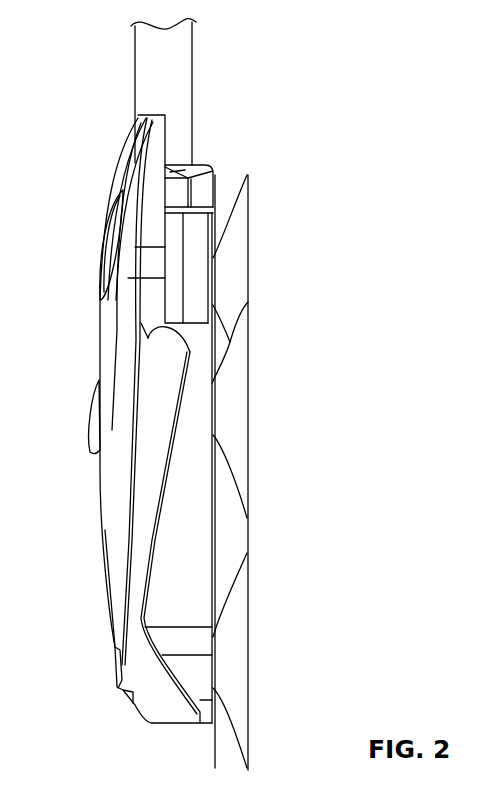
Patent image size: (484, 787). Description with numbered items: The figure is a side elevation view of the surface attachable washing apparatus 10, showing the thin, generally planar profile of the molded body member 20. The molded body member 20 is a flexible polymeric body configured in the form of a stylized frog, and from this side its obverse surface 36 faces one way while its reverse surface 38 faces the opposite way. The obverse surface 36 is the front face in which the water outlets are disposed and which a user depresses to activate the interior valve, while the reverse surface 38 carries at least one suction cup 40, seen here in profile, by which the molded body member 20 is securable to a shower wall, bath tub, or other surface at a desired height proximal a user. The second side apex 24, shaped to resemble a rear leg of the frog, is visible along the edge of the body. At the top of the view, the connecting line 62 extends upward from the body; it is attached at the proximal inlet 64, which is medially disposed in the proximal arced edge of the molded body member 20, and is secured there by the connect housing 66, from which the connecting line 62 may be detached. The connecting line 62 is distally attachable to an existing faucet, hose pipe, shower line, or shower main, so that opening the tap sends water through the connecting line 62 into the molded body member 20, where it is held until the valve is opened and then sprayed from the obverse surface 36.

The surface attachable washing apparatus 10 is at (357, 40).
The molded body member 20 is at (201, 580).
The second side apex 24 is at (165, 465).
The obverse surface 36 is at (100, 347).
The reverse surface 38 is at (213, 550).
The suction cup 40 is at (235, 265).
The connecting line 62 is at (175, 75).
The proximal inlet 64 is at (212, 153).
The connect housing 66 is at (205, 190).